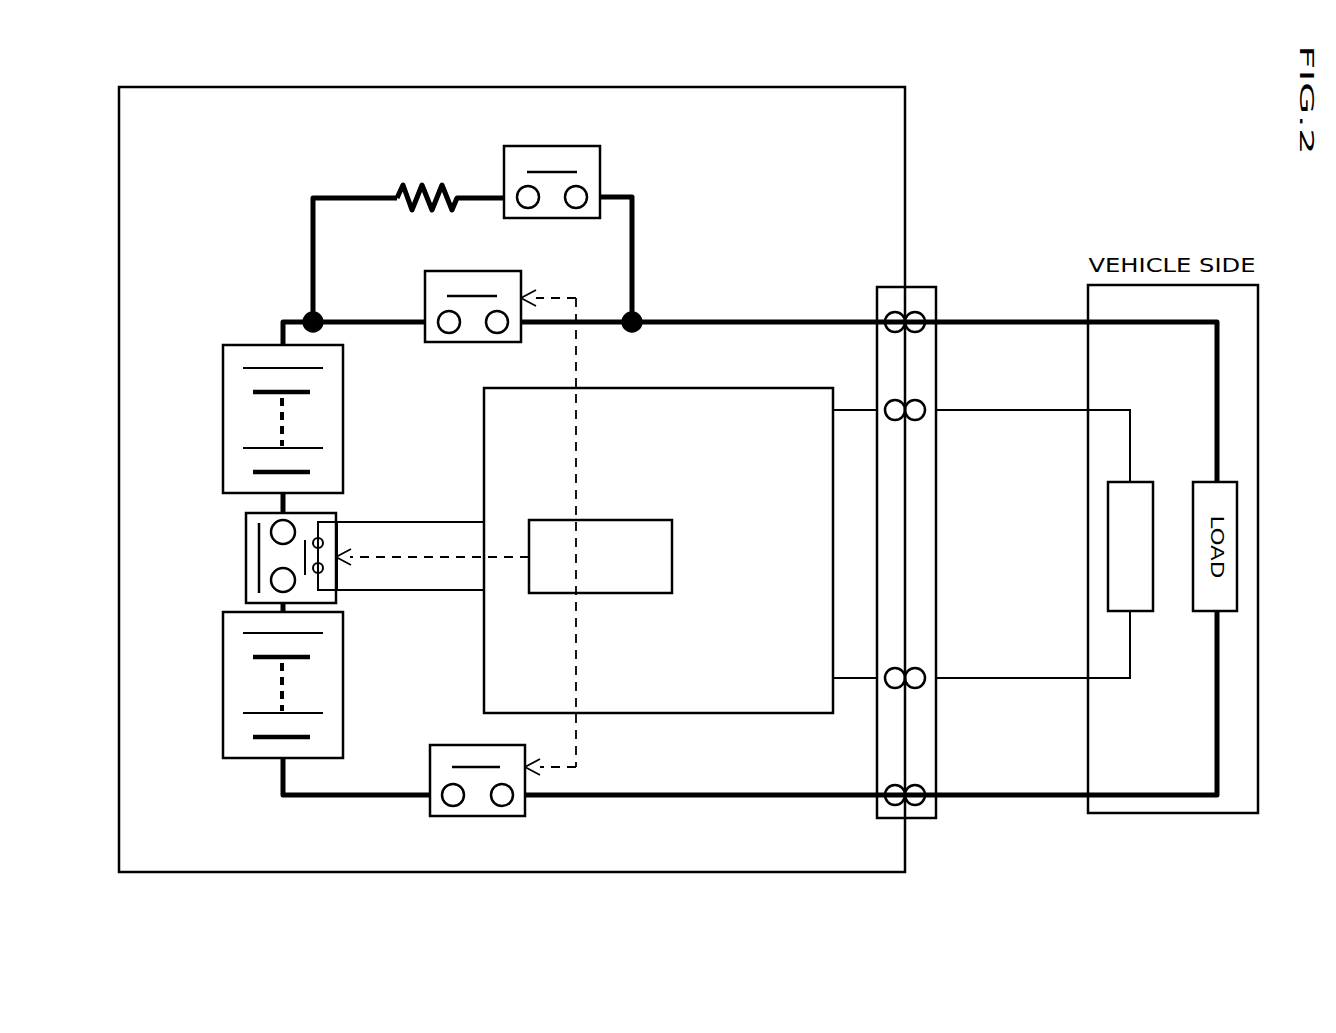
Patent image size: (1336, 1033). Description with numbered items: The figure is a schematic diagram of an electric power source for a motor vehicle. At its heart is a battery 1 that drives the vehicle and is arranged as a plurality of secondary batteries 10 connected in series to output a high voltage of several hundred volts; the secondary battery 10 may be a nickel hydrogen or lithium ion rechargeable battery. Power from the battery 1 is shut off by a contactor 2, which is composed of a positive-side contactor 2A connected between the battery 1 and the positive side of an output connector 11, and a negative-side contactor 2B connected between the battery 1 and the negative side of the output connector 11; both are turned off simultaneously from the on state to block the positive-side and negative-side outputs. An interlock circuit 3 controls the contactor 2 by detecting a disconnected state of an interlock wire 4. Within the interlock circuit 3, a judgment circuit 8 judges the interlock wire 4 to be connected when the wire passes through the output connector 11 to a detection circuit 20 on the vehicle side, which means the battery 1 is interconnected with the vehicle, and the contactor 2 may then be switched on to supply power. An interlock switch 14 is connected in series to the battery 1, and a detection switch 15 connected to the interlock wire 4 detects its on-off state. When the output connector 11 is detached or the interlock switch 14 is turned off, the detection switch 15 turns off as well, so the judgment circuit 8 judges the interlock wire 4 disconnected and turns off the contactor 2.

The battery 1 is at (218, 797).
The contactor 2 is at (752, 475).
The positive-side contactor 2A is at (427, 343).
The negative-side contactor 2B is at (437, 745).
The interlock circuit 3 is at (728, 387).
The interlock wire 4 is at (1025, 410).
The judgment circuit 8 is at (672, 540).
The secondary battery 10 is at (263, 448).
The output connector 11 is at (920, 285).
The interlock switch 14 is at (245, 560).
The detection switch 15 is at (326, 573).
The detection circuit 20 is at (1108, 555).